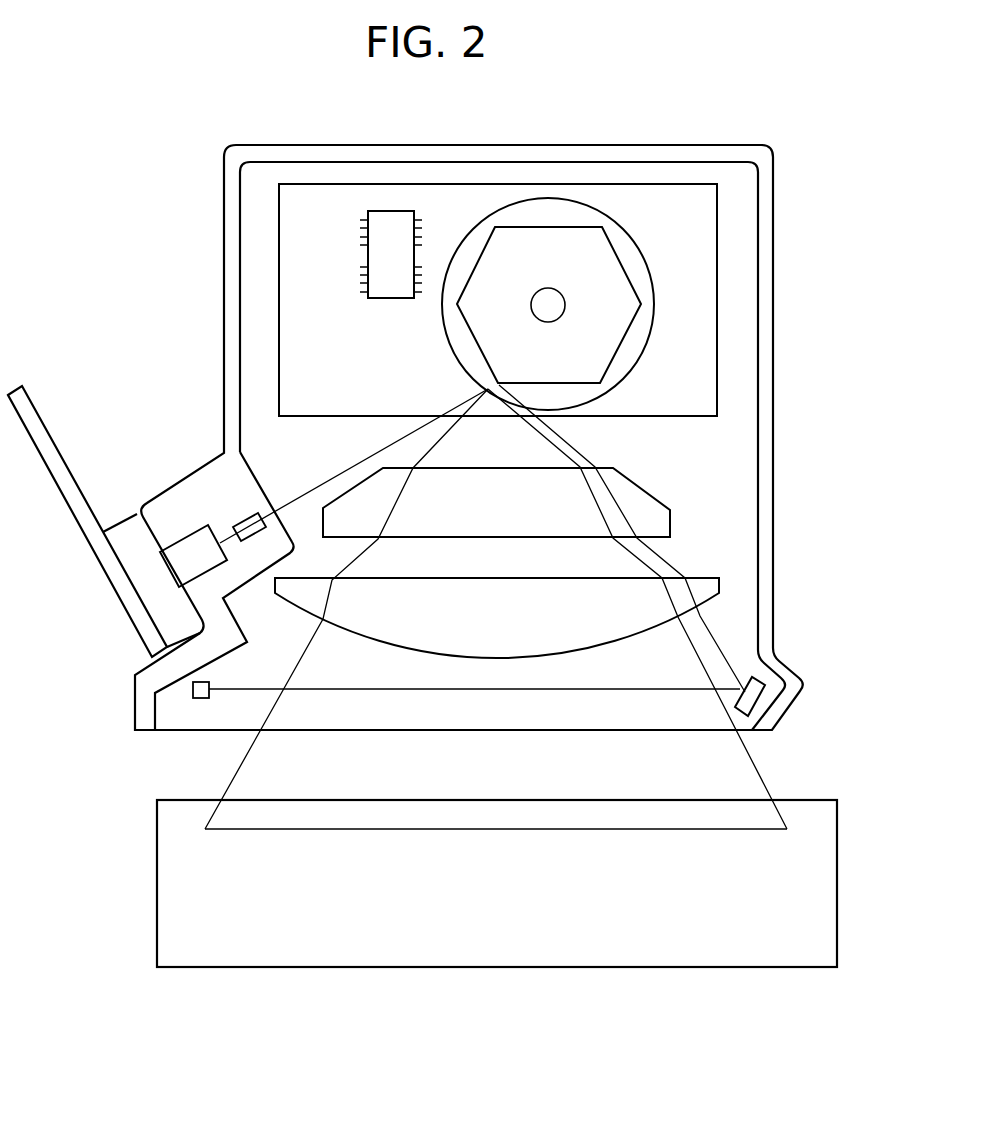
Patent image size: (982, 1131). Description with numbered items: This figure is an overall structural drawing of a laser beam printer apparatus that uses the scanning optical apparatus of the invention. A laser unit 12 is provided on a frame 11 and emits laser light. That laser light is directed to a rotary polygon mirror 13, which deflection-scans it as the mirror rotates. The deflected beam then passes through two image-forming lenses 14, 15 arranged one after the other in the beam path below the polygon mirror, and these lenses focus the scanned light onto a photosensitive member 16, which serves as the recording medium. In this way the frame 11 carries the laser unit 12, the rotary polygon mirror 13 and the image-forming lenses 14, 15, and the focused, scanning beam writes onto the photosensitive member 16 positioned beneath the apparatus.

The frame 11 is at (649, 155).
The laser unit 12 is at (145, 580).
The rotary polygon mirror 13 is at (615, 273).
The image-forming lens 14 is at (665, 521).
The image-forming lens 15 is at (710, 592).
The photosensitive member 16 is at (825, 886).